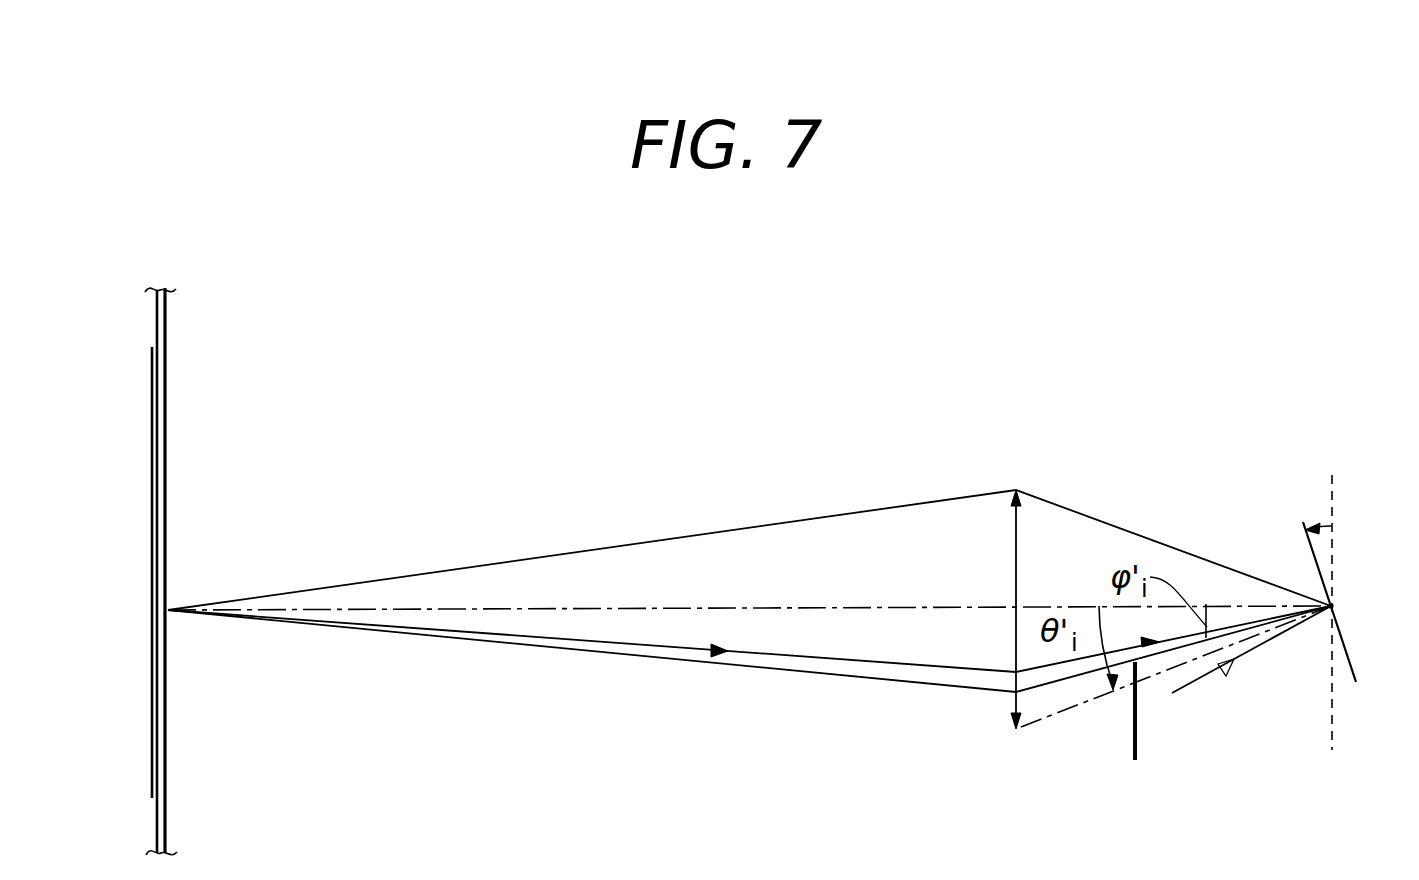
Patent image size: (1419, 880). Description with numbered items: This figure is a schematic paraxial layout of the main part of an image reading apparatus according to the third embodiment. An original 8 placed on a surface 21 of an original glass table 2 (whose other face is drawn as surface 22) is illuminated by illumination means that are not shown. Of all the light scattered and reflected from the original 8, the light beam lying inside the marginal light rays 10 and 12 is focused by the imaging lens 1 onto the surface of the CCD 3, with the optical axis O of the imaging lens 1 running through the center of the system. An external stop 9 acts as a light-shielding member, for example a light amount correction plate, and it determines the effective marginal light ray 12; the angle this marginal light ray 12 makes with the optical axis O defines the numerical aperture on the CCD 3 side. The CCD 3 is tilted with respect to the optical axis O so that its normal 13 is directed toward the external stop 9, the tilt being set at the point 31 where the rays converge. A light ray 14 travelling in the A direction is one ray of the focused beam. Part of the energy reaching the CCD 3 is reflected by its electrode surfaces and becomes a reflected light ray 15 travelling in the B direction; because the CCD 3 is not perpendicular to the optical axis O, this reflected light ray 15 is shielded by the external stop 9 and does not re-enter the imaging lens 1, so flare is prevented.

The imaging lens 1 is at (1012, 642).
The original glass table 2 is at (167, 538).
The CCD 3 is at (1352, 656).
The original 8 is at (151, 430).
The external stop 9 is at (1137, 738).
The marginal light ray 10 is at (762, 526).
The marginal light ray 12 is at (630, 656).
The normal 13 is at (1072, 710).
The light ray 14 is at (710, 650).
The reflected light ray 15 is at (1188, 688).
The surface 21 is at (156, 335).
The second surface of plate 22 is at (167, 352).
The reflecting point 31 is at (1322, 618).
The A direction A is at (733, 651).
The B direction B is at (1235, 668).
The optical axis O is at (857, 607).